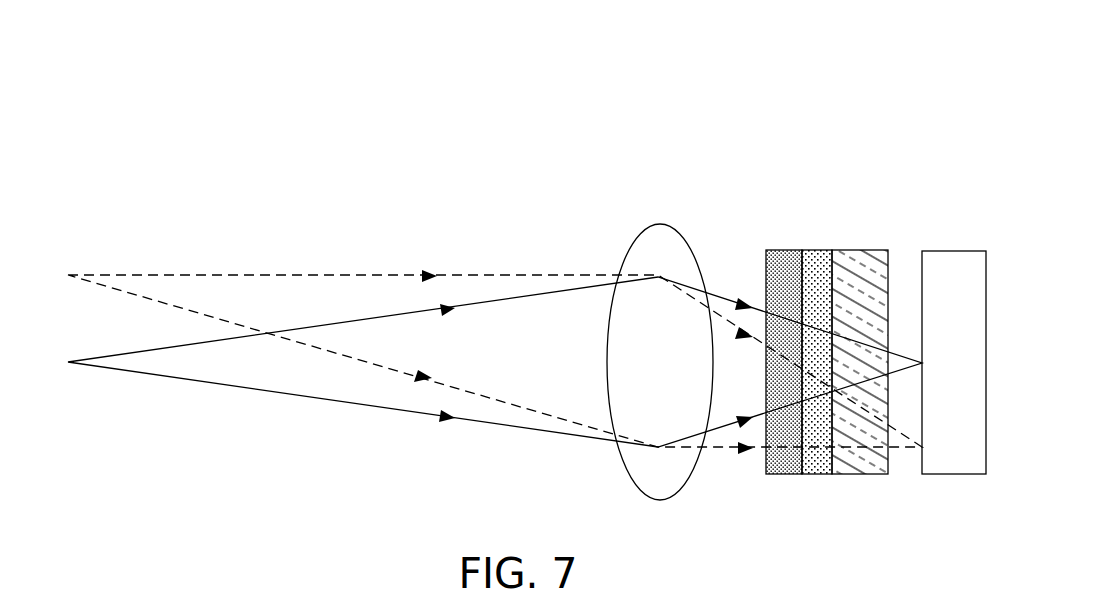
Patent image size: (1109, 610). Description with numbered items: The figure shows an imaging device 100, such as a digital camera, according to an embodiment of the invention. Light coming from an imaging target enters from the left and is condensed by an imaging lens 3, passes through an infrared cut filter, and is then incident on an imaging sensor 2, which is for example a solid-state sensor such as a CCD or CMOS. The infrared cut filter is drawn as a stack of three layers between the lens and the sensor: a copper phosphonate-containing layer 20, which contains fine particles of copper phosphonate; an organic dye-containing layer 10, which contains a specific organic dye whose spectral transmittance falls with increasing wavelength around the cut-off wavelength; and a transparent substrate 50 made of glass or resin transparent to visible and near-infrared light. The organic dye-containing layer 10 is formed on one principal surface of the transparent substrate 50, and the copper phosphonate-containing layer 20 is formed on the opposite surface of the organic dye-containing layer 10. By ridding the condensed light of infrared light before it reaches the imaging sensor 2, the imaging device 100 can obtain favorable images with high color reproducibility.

The imaging device 100 is at (588, 92).
The imaging lens 3 is at (659, 222).
The copper phosphonate-containing layer 20 is at (784, 263).
The organic dye-containing layer 10 is at (818, 265).
The transparent substrate 50 is at (857, 263).
The imaging sensor 2 is at (950, 263).